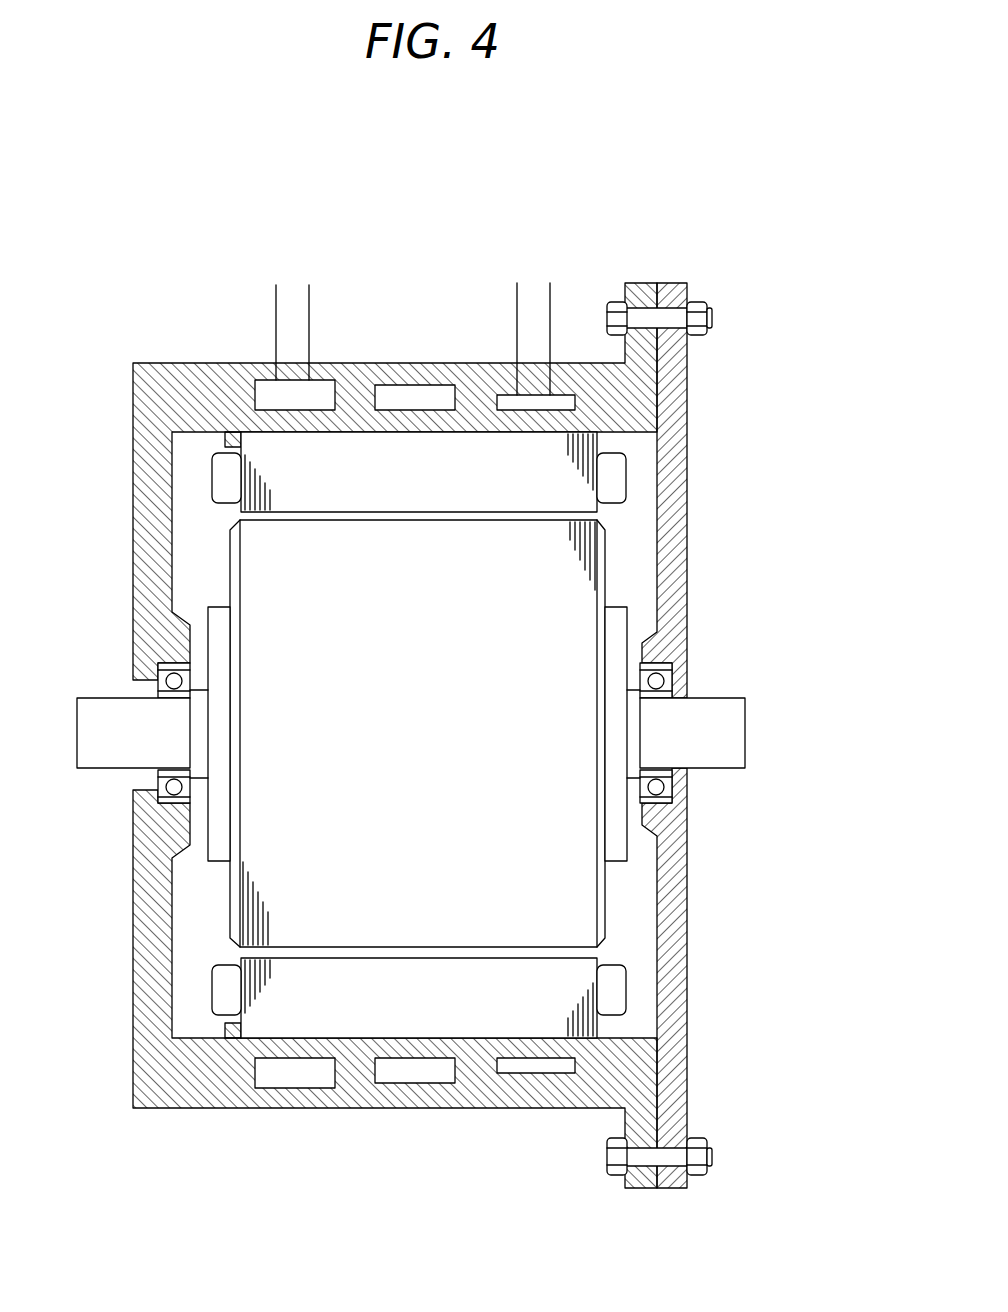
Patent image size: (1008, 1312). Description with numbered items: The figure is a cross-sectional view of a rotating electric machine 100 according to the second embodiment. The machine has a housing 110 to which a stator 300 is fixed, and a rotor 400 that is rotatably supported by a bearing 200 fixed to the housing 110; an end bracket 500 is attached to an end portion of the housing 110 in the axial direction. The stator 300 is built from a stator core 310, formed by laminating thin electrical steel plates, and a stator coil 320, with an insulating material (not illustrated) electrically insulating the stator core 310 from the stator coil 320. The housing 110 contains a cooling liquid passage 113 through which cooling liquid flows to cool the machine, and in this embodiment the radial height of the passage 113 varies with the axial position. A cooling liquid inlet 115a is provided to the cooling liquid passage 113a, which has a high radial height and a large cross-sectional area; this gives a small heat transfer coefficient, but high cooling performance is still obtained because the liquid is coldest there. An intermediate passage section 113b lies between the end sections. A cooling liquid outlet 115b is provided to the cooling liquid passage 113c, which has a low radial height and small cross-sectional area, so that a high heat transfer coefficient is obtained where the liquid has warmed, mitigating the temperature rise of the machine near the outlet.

The rotating electric machine 100 is at (459, 644).
The housing 110 is at (187, 388).
The cooling liquid passage 113 is at (415, 652).
The cooling liquid passage 113a is at (312, 398).
The second hole 113b is at (403, 398).
The cooling liquid passage 113c is at (515, 403).
The cooling liquid inlet 115a is at (292, 312).
The cooling liquid outlet 115b is at (542, 313).
The bearing 200 is at (172, 685).
The stator 300 is at (537, 705).
The stator core 310 is at (570, 457).
The stator coil 320 is at (610, 477).
The rotor 400 is at (607, 562).
The end bracket 500 is at (660, 890).